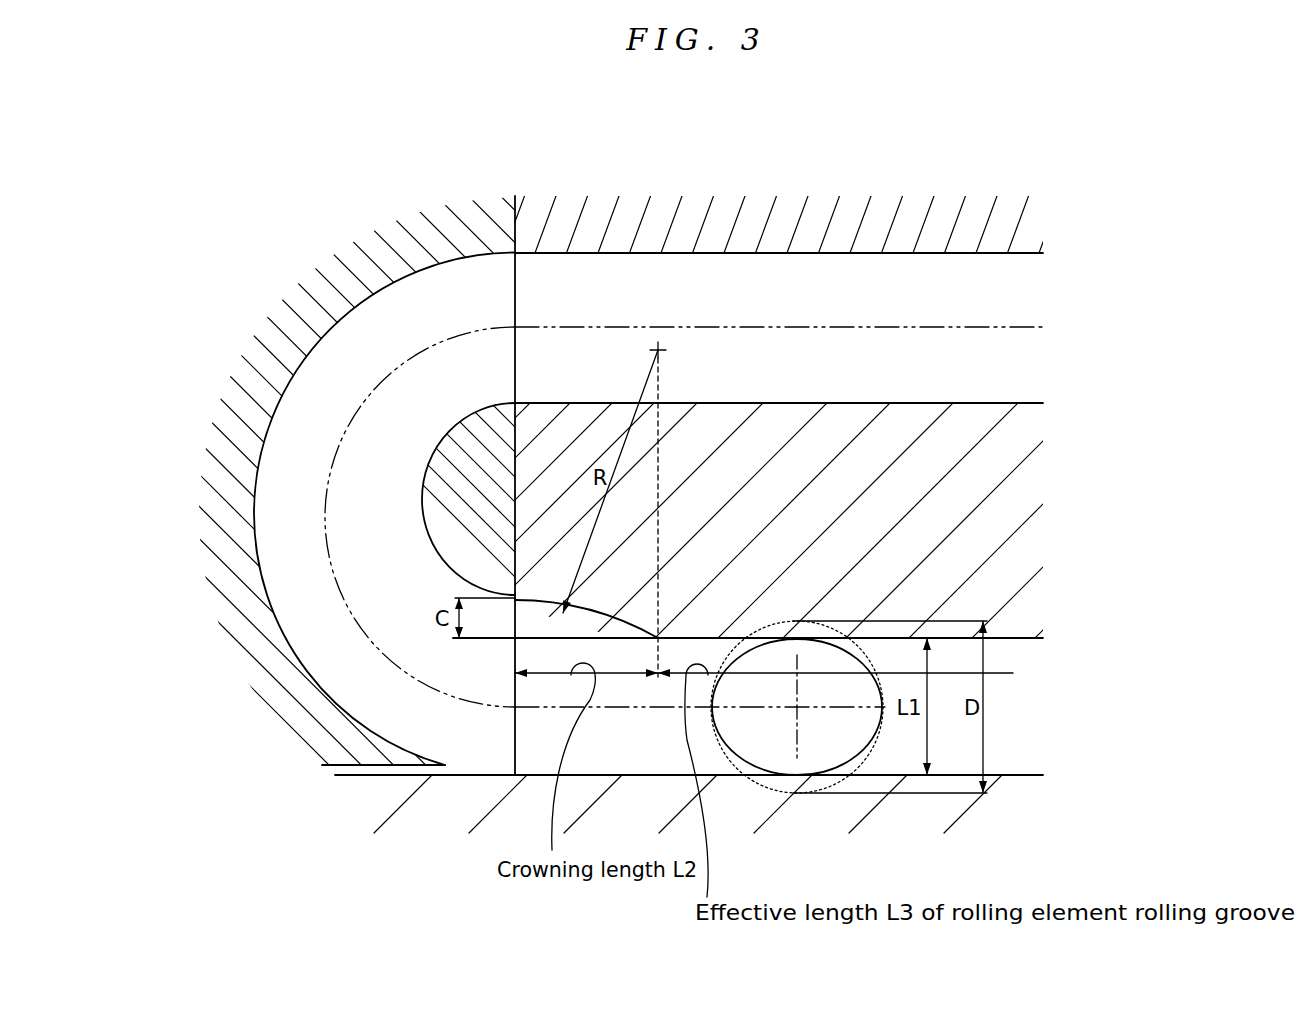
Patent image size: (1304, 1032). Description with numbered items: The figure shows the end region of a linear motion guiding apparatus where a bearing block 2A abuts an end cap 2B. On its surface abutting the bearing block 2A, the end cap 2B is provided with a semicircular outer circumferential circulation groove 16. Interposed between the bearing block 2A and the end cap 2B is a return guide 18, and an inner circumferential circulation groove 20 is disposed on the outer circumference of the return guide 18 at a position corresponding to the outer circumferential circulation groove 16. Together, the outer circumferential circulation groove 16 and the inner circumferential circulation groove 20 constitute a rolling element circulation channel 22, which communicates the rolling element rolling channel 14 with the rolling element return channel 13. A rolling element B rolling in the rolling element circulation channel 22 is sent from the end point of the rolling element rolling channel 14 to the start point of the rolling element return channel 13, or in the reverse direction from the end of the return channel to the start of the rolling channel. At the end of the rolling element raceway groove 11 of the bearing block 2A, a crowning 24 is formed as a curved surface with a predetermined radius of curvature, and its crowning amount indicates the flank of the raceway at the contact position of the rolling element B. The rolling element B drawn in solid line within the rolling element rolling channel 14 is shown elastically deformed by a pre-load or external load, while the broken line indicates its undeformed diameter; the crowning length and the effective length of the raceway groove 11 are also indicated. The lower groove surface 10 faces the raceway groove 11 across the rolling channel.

The bearing block 2A is at (867, 215).
The end cap 2B is at (423, 233).
The rolling element return channel 13 is at (752, 246).
The outer circumferential circulation groove 16 is at (266, 430).
The inner circumferential circulation groove 20 is at (422, 473).
The rolling element circulation channel 22 is at (125, 418).
The return guide 18 is at (437, 555).
The crowning 24 is at (578, 630).
The rolling element raceway groove 11 is at (1010, 638).
The rolling element rolling groove of rail 10 is at (1018, 775).
The rolling element rolling channel 14 is at (1137, 648).
The rolling element B is at (768, 780).